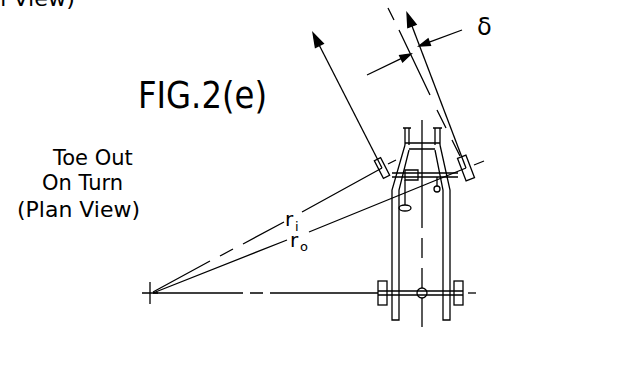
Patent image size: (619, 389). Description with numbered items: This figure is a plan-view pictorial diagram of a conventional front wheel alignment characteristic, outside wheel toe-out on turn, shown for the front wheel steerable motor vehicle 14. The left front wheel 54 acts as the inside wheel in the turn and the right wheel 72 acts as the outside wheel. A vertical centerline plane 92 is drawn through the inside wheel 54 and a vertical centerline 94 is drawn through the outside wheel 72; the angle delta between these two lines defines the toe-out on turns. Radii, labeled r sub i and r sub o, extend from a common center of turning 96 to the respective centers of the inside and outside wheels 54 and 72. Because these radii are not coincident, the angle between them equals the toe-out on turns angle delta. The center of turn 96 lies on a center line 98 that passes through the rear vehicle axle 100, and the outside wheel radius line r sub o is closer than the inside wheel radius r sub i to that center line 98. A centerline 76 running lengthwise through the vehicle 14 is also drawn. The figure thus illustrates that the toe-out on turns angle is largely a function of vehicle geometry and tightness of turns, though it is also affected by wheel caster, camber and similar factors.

The motor vehicle 14 is at (472, 263).
The left front wheel 54 is at (374, 160).
The right wheel 72 is at (474, 158).
The vehicle centerline 76 is at (424, 219).
The vertical centerline plane 92 is at (344, 92).
The vertical centerline 94 is at (413, 30).
The center of turning 96 is at (130, 295).
The center line 98 is at (321, 296).
The rear vehicle axle 100 is at (438, 297).